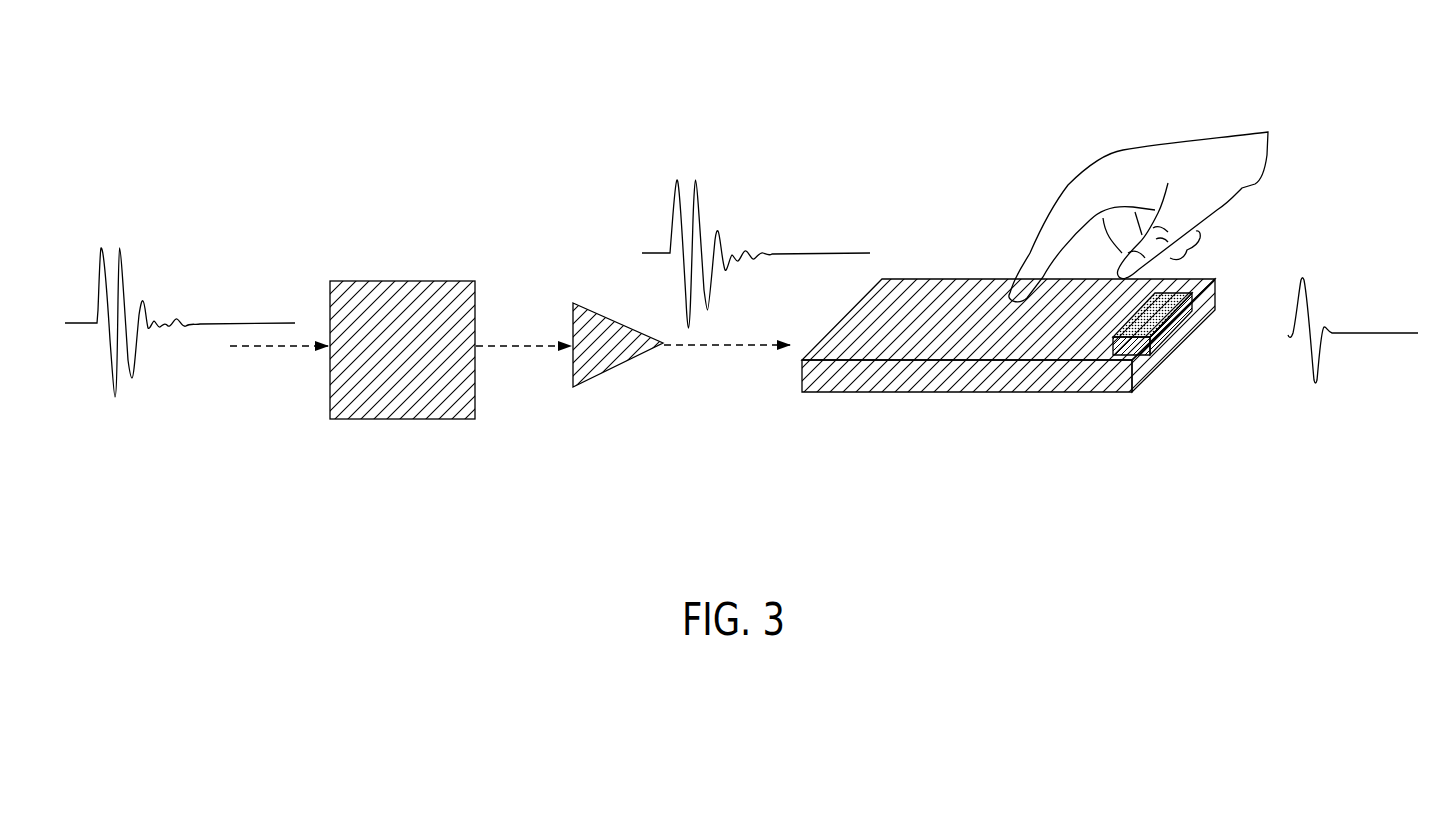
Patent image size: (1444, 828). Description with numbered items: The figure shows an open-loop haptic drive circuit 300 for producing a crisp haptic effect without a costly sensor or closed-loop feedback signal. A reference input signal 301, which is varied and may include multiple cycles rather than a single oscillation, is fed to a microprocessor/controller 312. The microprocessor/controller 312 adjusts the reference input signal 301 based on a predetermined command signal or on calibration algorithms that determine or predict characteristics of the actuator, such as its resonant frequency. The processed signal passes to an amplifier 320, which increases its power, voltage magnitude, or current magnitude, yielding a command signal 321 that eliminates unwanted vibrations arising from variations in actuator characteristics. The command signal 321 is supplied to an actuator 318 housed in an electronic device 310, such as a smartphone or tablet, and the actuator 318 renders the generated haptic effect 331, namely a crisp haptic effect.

The open-loop haptic drive circuit 300 is at (630, 78).
The reference input signal 301 is at (118, 248).
The microprocessor/controller 312 is at (400, 419).
The amplifier 320 is at (612, 375).
The command signal 321 is at (795, 253).
The electronic device 310 is at (997, 383).
The actuator 318 is at (1175, 325).
The generated haptic effect 331 is at (1357, 333).